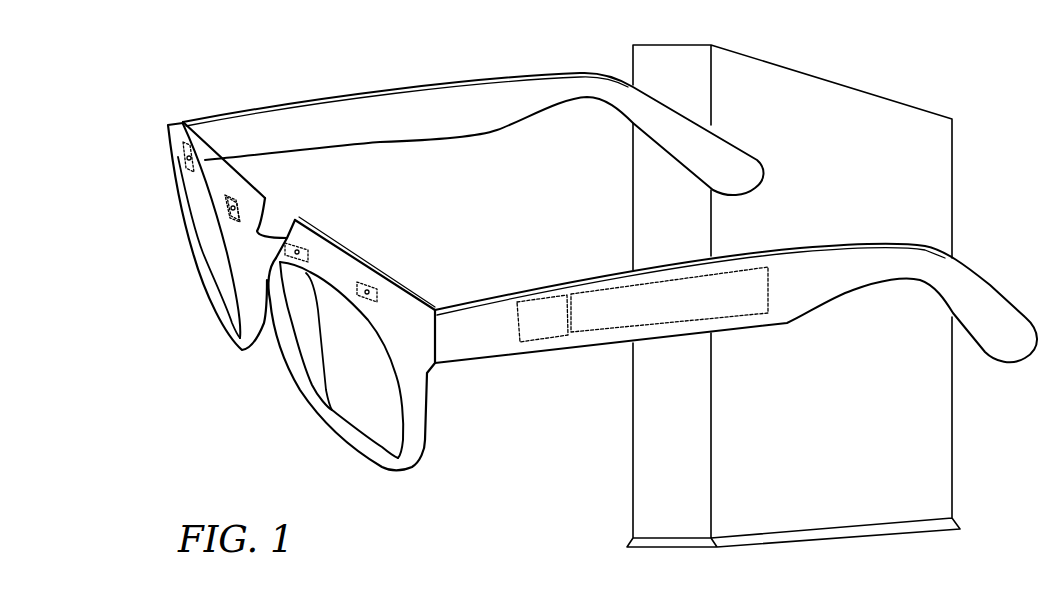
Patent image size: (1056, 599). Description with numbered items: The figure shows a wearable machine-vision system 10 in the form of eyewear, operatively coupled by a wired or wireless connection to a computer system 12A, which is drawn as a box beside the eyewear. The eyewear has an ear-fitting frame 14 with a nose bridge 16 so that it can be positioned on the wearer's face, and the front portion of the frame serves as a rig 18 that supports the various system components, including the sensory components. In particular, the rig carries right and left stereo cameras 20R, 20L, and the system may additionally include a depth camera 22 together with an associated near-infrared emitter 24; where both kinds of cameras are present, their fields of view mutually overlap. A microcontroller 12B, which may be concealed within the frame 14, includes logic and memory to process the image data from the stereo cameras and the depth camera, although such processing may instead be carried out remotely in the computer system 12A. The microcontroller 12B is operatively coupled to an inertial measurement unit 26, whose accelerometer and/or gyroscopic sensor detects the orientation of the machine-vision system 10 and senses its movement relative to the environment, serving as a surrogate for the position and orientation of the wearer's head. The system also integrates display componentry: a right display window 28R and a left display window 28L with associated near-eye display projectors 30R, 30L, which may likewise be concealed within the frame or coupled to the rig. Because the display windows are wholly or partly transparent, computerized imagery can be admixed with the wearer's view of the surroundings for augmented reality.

The wearable machine-vision system 10 is at (545, 381).
The computer system 12A is at (852, 478).
The microcontroller 12B is at (682, 311).
The ear-fitting frame 14 is at (438, 75).
The nose bridge 16 is at (252, 250).
The rig 18 is at (412, 333).
The left stereo camera 20L is at (357, 292).
The right stereo camera 20R is at (190, 150).
The depth camera 22 is at (228, 214).
The near-infrared emitter 24 is at (310, 250).
The inertial measurement unit 26 is at (550, 329).
The left display window 28L is at (356, 407).
The right display window 28R is at (229, 287).
The left near-eye display projector 30L is at (308, 258).
The right near-eye display projector 30R is at (288, 177).